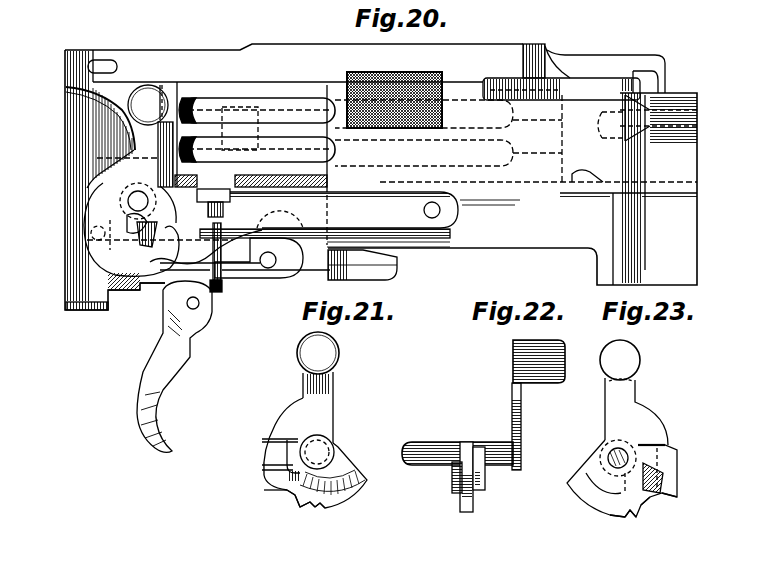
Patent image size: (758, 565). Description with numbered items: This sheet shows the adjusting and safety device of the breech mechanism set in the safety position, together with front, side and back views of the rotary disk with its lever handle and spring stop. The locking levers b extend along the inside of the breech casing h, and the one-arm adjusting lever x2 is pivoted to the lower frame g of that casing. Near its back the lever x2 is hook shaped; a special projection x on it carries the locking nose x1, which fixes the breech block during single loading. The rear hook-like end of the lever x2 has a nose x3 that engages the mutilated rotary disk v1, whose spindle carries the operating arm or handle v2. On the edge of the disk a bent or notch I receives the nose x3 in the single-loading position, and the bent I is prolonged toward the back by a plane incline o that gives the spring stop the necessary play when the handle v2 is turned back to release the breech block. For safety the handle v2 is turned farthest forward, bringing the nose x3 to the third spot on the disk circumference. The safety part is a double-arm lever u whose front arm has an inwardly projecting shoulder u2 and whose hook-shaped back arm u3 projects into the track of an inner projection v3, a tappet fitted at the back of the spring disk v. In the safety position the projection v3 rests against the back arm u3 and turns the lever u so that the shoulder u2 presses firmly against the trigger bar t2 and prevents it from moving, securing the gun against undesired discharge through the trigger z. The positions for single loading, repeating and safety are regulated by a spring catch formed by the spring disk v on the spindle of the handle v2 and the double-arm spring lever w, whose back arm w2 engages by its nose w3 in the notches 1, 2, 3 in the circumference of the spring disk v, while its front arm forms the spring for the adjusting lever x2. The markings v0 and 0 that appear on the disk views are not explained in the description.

In FIG. 20, the locking levers b is at (272, 110).
In FIG. 20, the breech casing h is at (346, 133).
In FIG. 20, the locking nose x1 is at (224, 183).
In FIG. 20, the operating arm or handle v2 is at (160, 148).
In FIG. 21, the operating arm or handle v2 is at (333, 380).
In FIG. 22, the operating arm or handle v2 is at (515, 392).
In FIG. 23, the operating arm or handle v2 is at (615, 390).
In FIG. 20, the mutilated disk v1 is at (105, 186).
In FIG. 21, the mutilated disk v1 is at (282, 448).
In FIG. 22, the mutilated disk v1 is at (483, 470).
In FIG. 20, the inner projection v3 is at (110, 216).
In FIG. 22, the inner projection v3 is at (457, 477).
In FIG. 23, the inner projection v3 is at (665, 480).
In FIG. 20, the back arm of safety lever u3 is at (98, 240).
In FIG. 20, the spring disk v is at (110, 237).
In FIG. 21, the spring disk v is at (355, 488).
In FIG. 22, the spring disk v is at (463, 502).
In FIG. 23, the spring disk v is at (585, 477).
In FIG. 20, the nose of adjusting lever x3 is at (108, 262).
In FIG. 20, the double arm lever u is at (115, 268).
In FIG. 20, the nose of spring lever w3 is at (137, 252).
In FIG. 20, the special projection x is at (215, 195).
In FIG. 20, the double arm spring lever w is at (259, 238).
In FIG. 20, the adjusting lever x2 is at (375, 219).
In FIG. 20, the trigger bar t2 is at (306, 247).
In FIG. 20, the shoulder or nose u2 is at (216, 290).
In FIG. 20, the back arm of spring lever w2 is at (243, 272).
In FIG. 20, the trigger z is at (188, 345).
In FIG. 20, the lower frame g is at (467, 242).
In FIG. 21, the safety lever stop v0 is at (290, 468).
In FIG. 21, the plane incline o is at (270, 490).
In FIG. 21, the notch 1 is at (288, 495).
In FIG. 23, the notch 1 is at (639, 498).
In FIG. 21, the bent or notch I is at (298, 497).
In FIG. 21, the notch 2 is at (307, 508).
In FIG. 23, the notch 2 is at (626, 512).
In FIG. 21, the notch 3 is at (321, 507).
In FIG. 23, the notch 3 is at (614, 510).
In FIG. 23, the zero position notch 0 is at (662, 493).